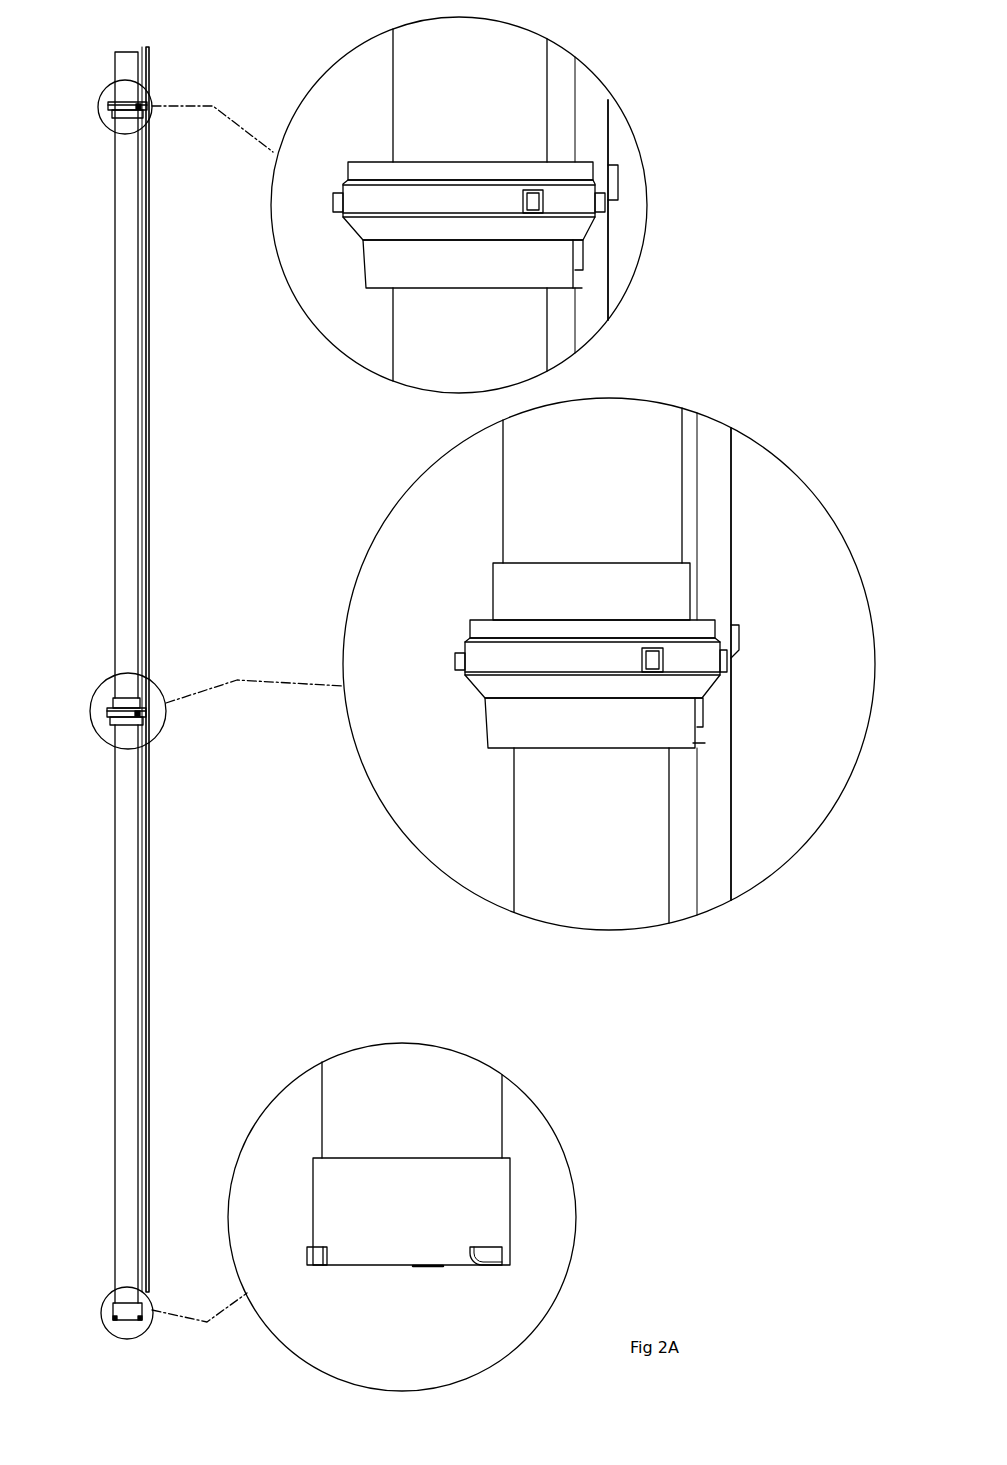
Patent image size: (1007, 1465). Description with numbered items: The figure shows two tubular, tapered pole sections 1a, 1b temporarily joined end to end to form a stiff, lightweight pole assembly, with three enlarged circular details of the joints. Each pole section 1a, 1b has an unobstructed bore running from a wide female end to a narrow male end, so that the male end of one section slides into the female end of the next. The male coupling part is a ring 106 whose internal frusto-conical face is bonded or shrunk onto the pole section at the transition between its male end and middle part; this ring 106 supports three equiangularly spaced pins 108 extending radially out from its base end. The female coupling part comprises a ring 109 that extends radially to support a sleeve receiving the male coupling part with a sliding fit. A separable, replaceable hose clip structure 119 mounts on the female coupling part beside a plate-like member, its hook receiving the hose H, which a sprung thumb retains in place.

The pole section 1a is at (80, 1014).
The pole section 1b is at (86, 375).
The ring 109 is at (426, 273).
The hose H is at (761, 635).
The hose clip structure 119 is at (791, 535).
The ring 106 is at (351, 1201).
The pins 108 is at (378, 1229).